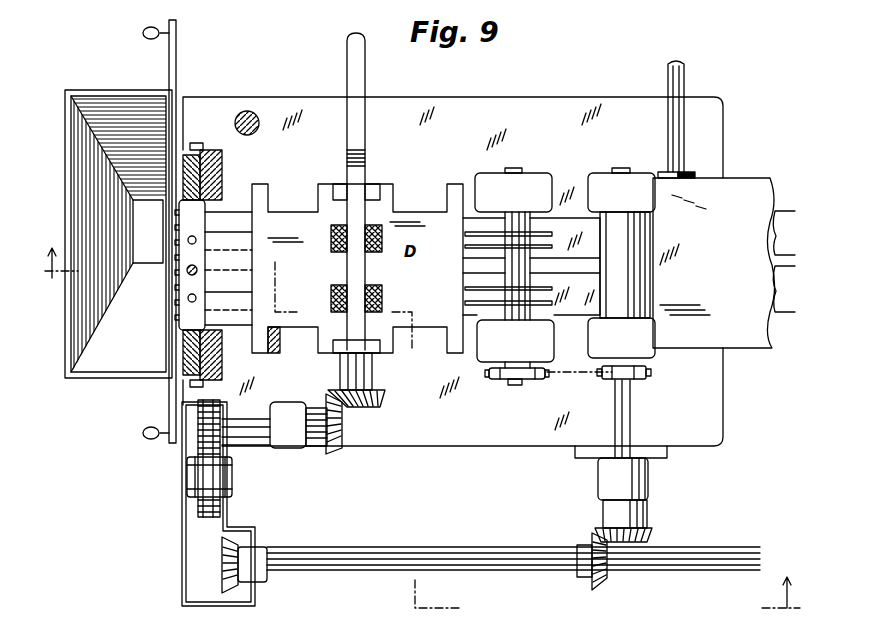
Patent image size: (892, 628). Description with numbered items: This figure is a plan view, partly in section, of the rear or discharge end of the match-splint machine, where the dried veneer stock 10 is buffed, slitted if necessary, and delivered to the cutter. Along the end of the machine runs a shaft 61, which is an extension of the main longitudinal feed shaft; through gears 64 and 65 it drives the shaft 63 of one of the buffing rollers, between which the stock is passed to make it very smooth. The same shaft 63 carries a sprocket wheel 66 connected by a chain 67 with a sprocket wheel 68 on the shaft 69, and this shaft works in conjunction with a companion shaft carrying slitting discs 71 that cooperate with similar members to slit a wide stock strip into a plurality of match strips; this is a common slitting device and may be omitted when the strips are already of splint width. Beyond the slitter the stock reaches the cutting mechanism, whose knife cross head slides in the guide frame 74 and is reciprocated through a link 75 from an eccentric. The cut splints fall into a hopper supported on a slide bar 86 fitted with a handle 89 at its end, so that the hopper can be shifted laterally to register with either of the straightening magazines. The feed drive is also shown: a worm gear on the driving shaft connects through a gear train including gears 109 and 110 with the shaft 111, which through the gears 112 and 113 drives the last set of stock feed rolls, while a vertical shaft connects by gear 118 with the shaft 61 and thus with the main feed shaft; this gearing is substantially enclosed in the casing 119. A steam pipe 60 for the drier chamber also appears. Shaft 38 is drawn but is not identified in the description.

The veneer stock 10 is at (790, 325).
The vertical shaft 38 is at (366, 76).
The steam pipe 60 is at (686, 80).
The shaft 61 is at (722, 560).
The shaft 63 is at (633, 400).
The gear 64 is at (652, 530).
The gear 65 is at (594, 536).
The sprocket wheel 66 is at (650, 373).
The chain 67 is at (568, 380).
The sprocket wheel 68 is at (493, 382).
The shaft 69 is at (515, 387).
The slitting discs 71 is at (483, 306).
The guide frame 74 is at (222, 365).
The link 75 is at (190, 276).
The slide bar 86 is at (174, 72).
The handle 89 is at (154, 29).
The gear 109 is at (224, 503).
The gear 110 is at (205, 436).
The shaft 111 is at (256, 440).
The gear 112 is at (333, 456).
The gear 113 is at (371, 406).
The gear 118 is at (248, 544).
The casing 119 is at (228, 520).